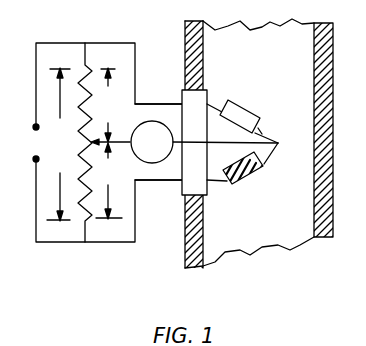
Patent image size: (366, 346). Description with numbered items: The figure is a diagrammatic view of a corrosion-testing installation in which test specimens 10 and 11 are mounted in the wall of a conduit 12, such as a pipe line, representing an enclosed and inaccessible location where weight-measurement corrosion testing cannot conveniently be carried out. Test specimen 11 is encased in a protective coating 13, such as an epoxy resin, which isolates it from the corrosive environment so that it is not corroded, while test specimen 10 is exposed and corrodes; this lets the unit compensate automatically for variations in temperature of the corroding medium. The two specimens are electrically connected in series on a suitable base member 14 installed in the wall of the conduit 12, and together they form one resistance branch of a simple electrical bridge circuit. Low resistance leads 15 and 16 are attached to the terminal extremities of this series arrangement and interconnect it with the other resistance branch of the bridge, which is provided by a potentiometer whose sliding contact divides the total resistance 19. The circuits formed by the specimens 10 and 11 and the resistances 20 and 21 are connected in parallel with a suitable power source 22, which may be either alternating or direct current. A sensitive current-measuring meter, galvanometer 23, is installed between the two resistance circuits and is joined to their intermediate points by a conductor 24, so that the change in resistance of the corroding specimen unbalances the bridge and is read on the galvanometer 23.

The test specimen 10 is at (243, 104).
The test specimen 11 is at (271, 151).
The conduit 12 is at (259, 148).
The protective coating 13 is at (226, 185).
The mounting bar 14 is at (209, 94).
The low resistance lead 15 is at (163, 104).
The low resistance lead 16 is at (152, 181).
The total resistance 19 is at (58, 144).
The resistance 20 is at (106, 105).
The resistance 21 is at (108, 181).
The power source 22 is at (35, 142).
The galvanometer 23 is at (135, 155).
The conductor 24 is at (263, 147).